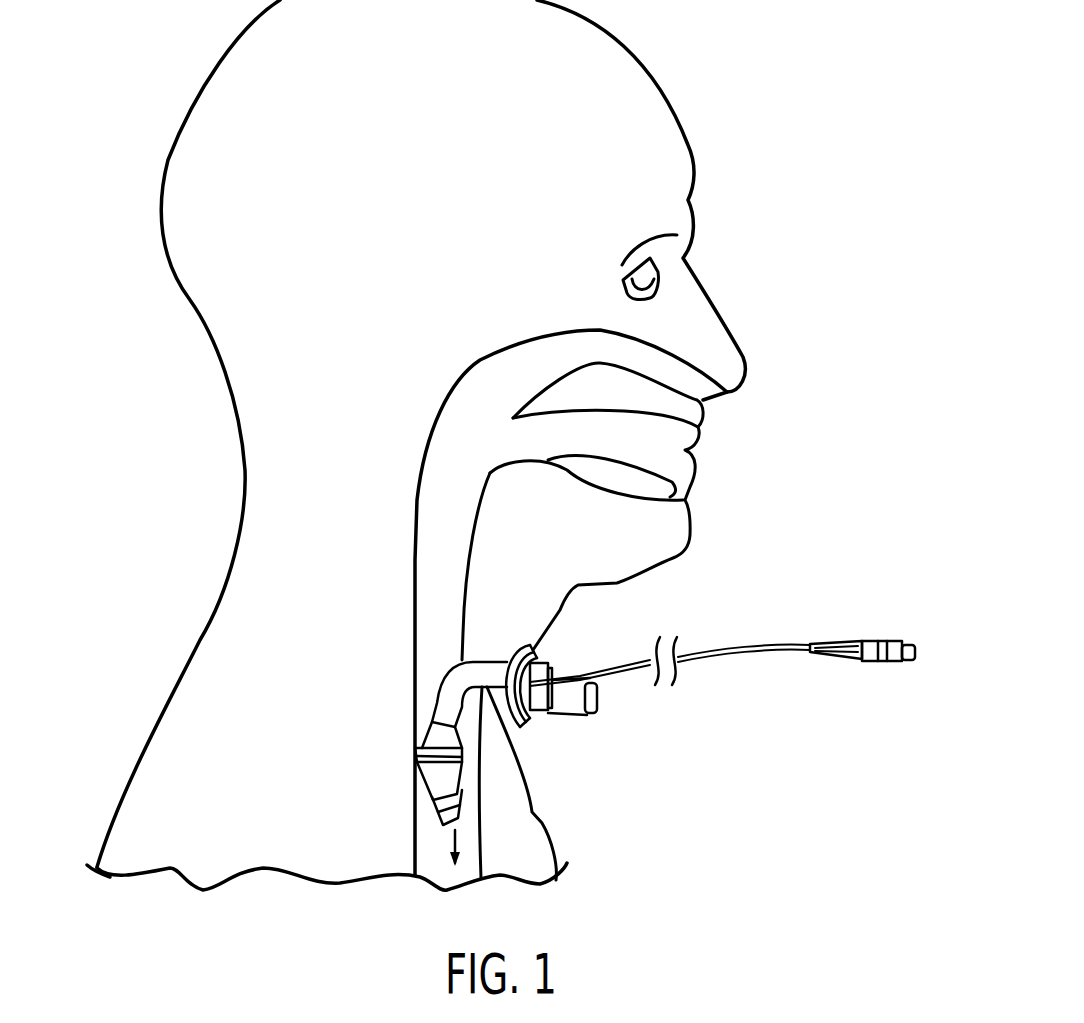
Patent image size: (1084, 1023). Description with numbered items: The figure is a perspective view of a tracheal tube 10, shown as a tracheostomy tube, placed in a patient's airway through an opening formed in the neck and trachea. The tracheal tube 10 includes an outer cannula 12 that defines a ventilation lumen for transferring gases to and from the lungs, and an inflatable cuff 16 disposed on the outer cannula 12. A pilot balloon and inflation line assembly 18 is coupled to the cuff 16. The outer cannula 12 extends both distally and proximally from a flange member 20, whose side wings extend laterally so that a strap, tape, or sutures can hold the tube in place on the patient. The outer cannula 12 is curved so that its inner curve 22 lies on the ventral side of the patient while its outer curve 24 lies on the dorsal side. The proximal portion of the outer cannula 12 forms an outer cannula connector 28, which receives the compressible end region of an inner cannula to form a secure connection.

The tracheal tube 10 is at (438, 650).
The outer cannula 12 is at (455, 740).
The inflatable cuff 16 is at (450, 773).
The pilot balloon and inflation line assembly 18 is at (878, 662).
The flange member 20 is at (527, 717).
The inner curve 22 is at (508, 690).
The outer curve 24 is at (435, 675).
The outer cannula connector 28 is at (563, 710).